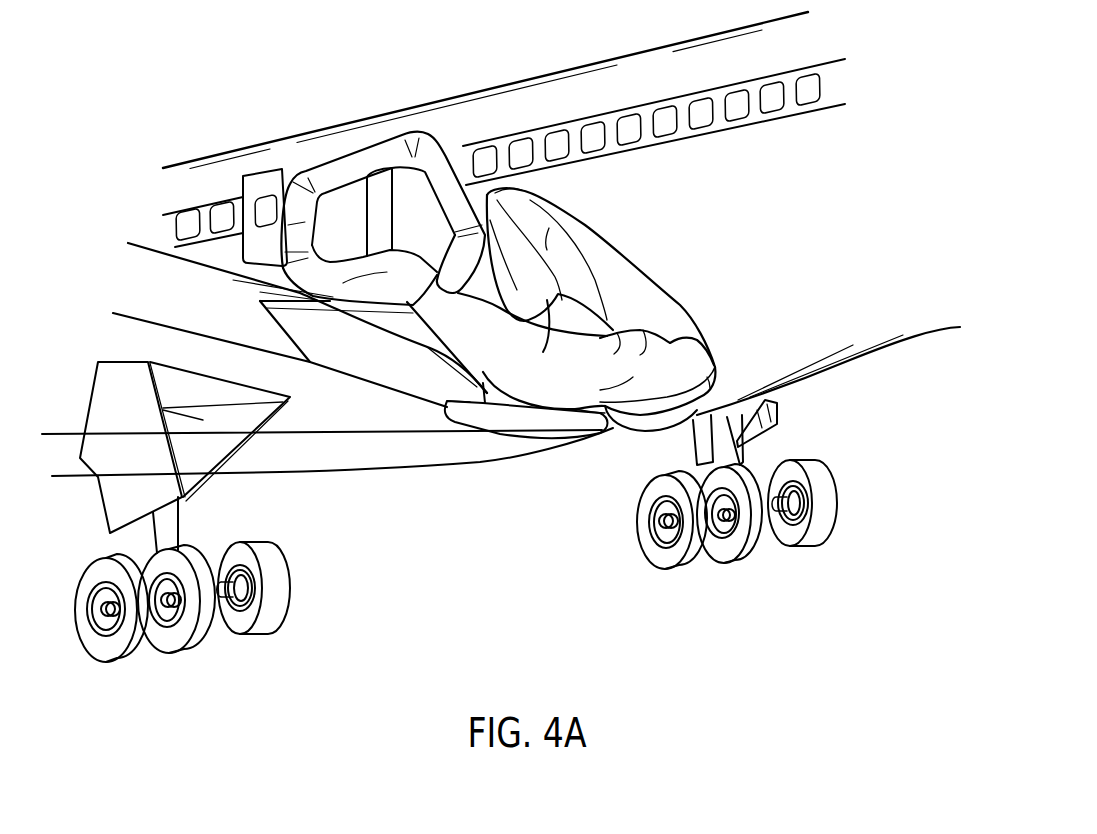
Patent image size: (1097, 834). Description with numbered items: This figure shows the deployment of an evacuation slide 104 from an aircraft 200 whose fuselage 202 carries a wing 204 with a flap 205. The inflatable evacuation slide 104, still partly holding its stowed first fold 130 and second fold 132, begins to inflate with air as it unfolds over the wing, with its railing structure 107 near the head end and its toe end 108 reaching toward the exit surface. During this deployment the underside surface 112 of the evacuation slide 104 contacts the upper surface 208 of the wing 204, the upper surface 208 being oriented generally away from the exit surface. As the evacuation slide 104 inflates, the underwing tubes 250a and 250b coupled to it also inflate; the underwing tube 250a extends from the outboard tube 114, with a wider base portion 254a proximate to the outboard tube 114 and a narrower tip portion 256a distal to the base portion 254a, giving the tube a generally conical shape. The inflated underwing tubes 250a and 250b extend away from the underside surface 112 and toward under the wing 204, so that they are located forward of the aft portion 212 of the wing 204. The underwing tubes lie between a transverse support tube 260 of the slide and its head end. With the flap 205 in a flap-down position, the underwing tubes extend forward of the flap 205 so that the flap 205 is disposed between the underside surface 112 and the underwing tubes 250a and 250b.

The aircraft 200 is at (177, 172).
The fuselage 202 is at (764, 191).
The wing 204 is at (130, 258).
The flap 205 is at (347, 364).
The upper surface 208 is at (157, 301).
The evacuation slide 104 is at (352, 128).
The railing structure 107 is at (393, 152).
The toe end 108 is at (549, 341).
The underside surface 112 is at (628, 238).
The outboard tube 114 is at (479, 356).
The first fold 130 is at (603, 342).
The second fold 132 is at (507, 192).
The transverse support tube 260 is at (695, 352).
The underwing tube 250a is at (528, 443).
The underwing tube 250b is at (647, 413).
The base portion 254a is at (592, 413).
The tip portion 256a is at (463, 413).
The aft portion 212 is at (488, 417).